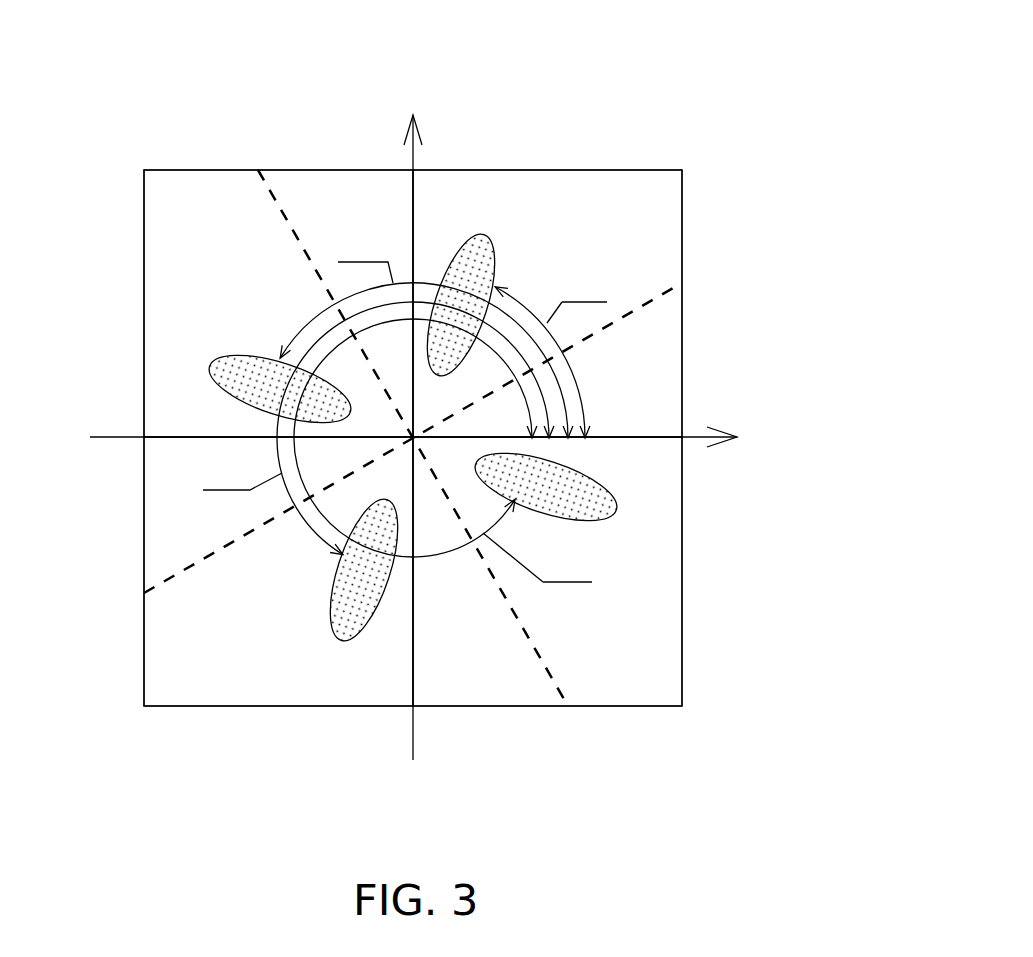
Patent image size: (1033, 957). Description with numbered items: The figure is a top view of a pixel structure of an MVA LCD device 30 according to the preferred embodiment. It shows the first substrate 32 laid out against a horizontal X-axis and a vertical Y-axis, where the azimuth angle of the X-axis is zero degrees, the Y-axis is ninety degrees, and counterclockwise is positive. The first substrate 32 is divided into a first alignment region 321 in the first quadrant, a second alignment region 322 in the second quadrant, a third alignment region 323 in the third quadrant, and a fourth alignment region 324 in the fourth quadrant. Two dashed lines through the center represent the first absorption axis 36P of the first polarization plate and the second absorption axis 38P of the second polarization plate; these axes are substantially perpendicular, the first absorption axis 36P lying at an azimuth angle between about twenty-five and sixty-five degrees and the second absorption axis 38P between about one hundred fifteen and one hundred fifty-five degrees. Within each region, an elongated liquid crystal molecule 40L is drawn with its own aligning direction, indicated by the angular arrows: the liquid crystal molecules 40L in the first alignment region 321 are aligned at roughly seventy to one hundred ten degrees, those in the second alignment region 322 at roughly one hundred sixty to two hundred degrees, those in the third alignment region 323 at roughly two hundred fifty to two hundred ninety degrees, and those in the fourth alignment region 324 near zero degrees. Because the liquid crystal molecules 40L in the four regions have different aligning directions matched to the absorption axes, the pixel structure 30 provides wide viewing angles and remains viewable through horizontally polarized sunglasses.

The pixel structure of an MVA LCD device 30 is at (722, 83).
The first substrate 32 is at (610, 170).
The first alignment region 321 is at (650, 232).
The second alignment region 322 is at (222, 232).
The third alignment region 323 is at (222, 677).
The fourth alignment region 324 is at (650, 677).
The first absorption axis 36P is at (646, 306).
The second absorption axis 38P is at (277, 197).
The liquid crystal molecules 40L is at (487, 237).